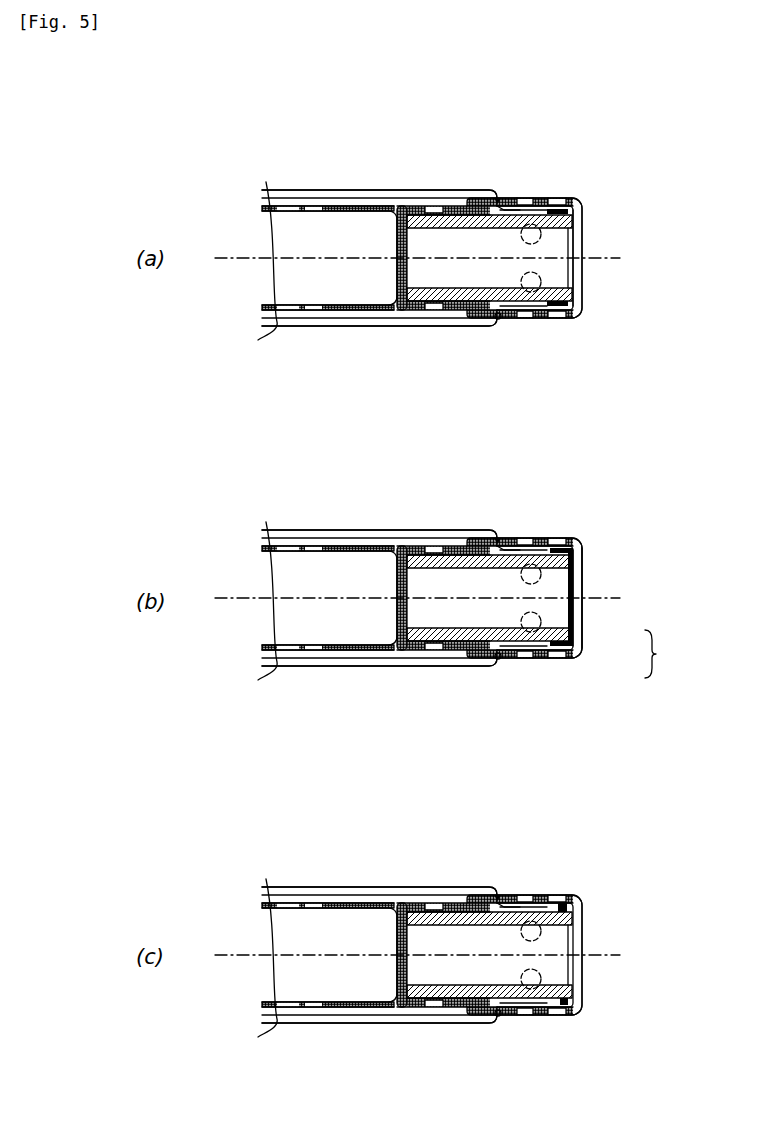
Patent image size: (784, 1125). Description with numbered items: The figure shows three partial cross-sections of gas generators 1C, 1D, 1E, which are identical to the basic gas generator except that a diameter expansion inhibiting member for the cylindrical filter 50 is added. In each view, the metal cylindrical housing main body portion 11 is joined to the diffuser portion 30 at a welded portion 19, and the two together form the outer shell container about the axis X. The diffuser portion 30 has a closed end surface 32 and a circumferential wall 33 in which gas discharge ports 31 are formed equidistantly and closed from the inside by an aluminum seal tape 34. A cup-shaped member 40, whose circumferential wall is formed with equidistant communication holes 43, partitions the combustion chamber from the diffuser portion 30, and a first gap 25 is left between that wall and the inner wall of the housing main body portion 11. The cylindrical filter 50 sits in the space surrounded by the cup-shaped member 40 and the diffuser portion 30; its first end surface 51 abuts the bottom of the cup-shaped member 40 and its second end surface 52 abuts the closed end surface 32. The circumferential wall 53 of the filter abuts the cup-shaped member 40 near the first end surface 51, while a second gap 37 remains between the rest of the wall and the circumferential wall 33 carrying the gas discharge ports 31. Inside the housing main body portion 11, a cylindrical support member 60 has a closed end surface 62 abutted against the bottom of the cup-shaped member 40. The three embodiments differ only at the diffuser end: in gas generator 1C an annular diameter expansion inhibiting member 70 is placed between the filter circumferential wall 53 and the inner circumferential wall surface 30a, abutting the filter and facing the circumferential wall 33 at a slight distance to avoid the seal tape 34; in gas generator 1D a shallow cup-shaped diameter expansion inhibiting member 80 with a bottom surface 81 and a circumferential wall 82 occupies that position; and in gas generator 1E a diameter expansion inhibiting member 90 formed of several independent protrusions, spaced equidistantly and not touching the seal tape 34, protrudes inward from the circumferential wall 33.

The gas generator 1C is at (348, 186).
The gas generator 1D is at (422, 566).
The gas generator 1E is at (422, 923).
The cylindrical housing main body portion 11 is at (310, 190).
The welded portion 19 is at (499, 320).
The first gap 25 is at (437, 312).
The diffuser portion 30 is at (584, 198).
The inner circumferential wall surface 30a is at (570, 308).
The gas discharge ports 31 is at (528, 199).
The closed end surface 32 is at (559, 236).
The circumferential wall 33 is at (556, 320).
The seal tape 34 is at (517, 303).
The second gap 37 is at (495, 206).
The cup-shaped member 40 is at (405, 312).
The communication holes 43 is at (434, 206).
The cylindrical filter 50 is at (461, 227).
The first end surface 51 is at (399, 299).
The second end surface 52 is at (568, 302).
The circumferential wall 53 is at (488, 304).
The cylindrical support member 60 is at (330, 212).
The closed end surface 62 is at (392, 227).
The annular diameter expansion inhibiting member 70 is at (559, 209).
The cup-shaped diameter expansion inhibiting member 80 is at (664, 654).
The bottom surface 81 is at (573, 622).
The circumferential wall 82 is at (567, 648).
The diameter expansion inhibiting member 90 is at (562, 901).
The axis X is at (427, 608).